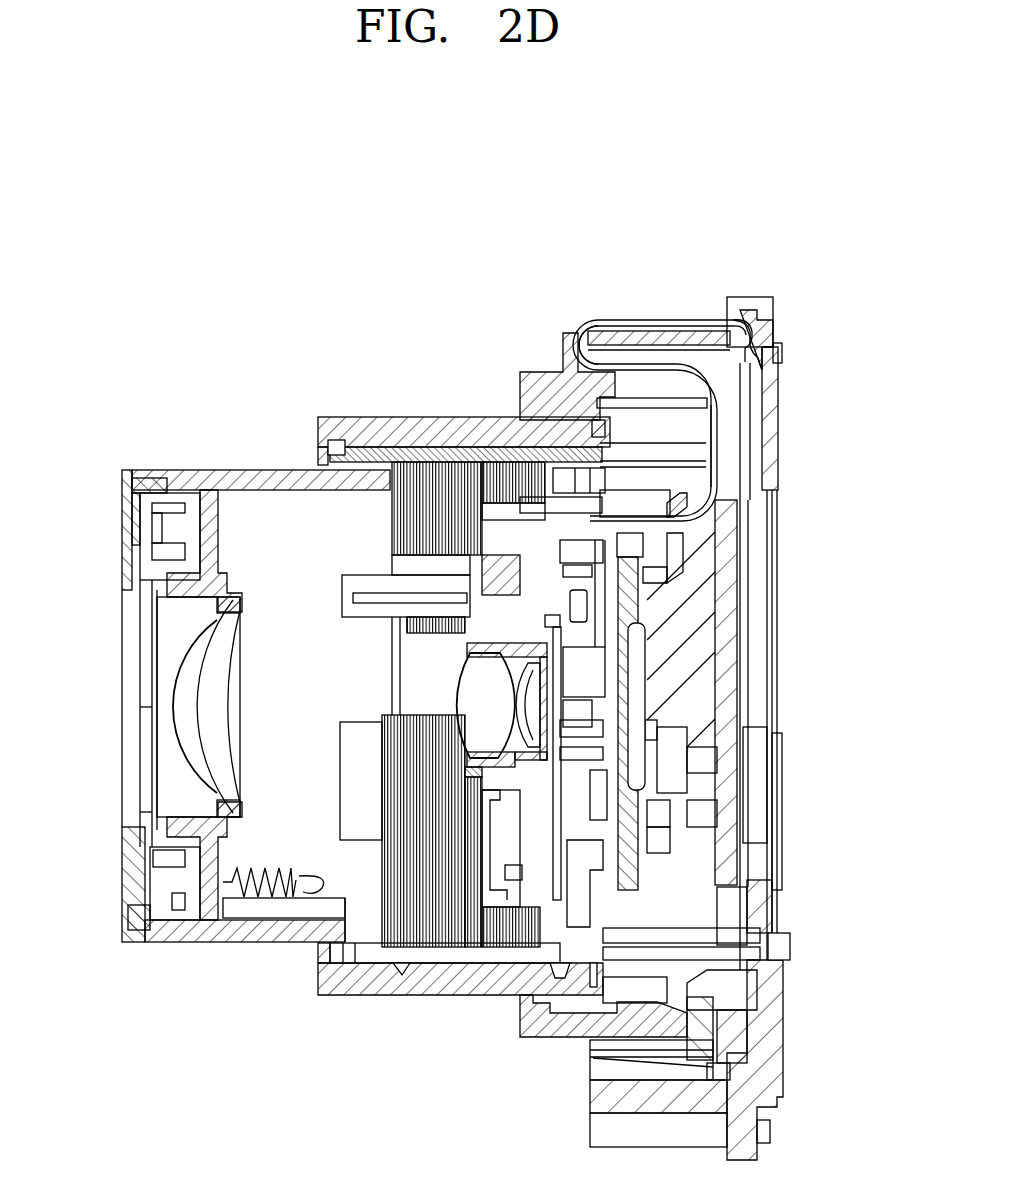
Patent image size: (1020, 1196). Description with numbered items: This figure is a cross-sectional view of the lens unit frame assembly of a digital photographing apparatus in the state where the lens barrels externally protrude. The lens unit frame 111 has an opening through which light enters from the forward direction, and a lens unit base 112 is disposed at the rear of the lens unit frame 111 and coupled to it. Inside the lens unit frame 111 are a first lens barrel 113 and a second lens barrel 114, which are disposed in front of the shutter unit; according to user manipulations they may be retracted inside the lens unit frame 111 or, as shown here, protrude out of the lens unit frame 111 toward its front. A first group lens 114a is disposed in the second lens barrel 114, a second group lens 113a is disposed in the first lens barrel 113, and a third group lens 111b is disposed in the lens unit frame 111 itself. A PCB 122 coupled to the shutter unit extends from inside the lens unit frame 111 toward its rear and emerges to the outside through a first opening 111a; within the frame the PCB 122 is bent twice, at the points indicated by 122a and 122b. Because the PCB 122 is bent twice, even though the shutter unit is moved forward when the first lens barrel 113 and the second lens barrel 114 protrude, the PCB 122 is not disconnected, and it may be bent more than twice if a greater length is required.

The lens unit frame 111 is at (530, 372).
The first opening 111a is at (578, 322).
The third group lens 111b is at (738, 310).
The lens unit base 112 is at (768, 337).
The first lens barrel 113 is at (415, 417).
The second group lens 113a is at (473, 696).
The second lens barrel 114 is at (237, 470).
The first group lens 114a is at (207, 722).
The PCB 122 is at (662, 322).
The first bending point of the PCB 122a is at (727, 425).
The second bending point of the PCB 122b is at (582, 334).